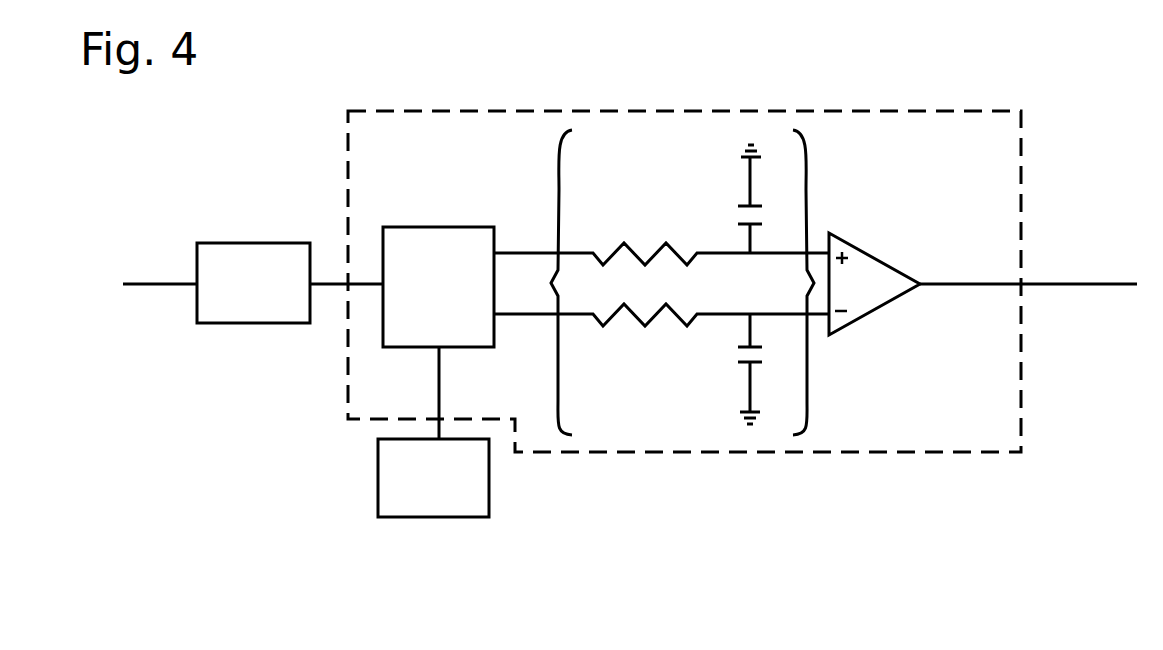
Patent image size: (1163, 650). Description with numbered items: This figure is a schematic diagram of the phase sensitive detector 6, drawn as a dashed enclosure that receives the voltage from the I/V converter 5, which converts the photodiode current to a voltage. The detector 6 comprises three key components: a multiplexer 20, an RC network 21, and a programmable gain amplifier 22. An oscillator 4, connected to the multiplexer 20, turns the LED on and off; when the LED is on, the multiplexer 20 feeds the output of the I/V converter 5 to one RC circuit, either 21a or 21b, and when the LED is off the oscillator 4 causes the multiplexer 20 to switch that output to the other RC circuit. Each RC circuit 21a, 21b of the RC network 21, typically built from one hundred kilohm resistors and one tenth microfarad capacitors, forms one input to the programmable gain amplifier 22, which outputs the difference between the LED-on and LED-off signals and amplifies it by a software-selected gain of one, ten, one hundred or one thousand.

The oscillator 4 is at (438, 505).
The I/V converter 5 is at (293, 263).
The phase sensitive detector 6 is at (833, 453).
The multiplexer 20 is at (472, 240).
The RC network 21 is at (808, 188).
The RC circuit 21a is at (709, 211).
The RC circuit 21b is at (713, 350).
The programmable gain amplifier 22 is at (878, 270).